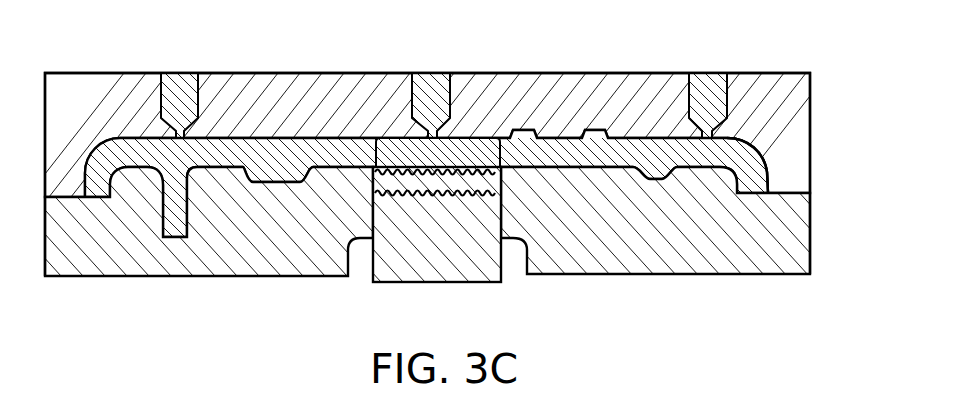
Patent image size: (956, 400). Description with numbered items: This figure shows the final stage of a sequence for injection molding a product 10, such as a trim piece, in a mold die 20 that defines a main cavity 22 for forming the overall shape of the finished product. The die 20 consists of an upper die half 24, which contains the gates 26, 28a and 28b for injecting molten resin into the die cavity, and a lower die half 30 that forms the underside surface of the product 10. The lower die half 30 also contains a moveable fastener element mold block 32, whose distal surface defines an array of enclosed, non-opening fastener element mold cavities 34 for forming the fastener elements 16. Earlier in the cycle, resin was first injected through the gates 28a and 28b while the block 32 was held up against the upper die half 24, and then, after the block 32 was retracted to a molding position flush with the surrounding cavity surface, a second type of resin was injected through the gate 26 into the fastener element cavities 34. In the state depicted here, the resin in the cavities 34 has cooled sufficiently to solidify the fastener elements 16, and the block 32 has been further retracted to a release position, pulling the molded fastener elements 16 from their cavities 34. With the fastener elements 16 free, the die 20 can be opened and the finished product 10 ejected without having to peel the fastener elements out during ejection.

The mold die 20 is at (779, 51).
The upper die half 24 is at (45, 88).
The lower die half 30 is at (45, 215).
The product 10 is at (270, 138).
The main cavity 22 is at (763, 163).
The gate 28a is at (182, 73).
The gate 26 is at (433, 73).
The gate 28b is at (700, 73).
The fastener element 16 is at (377, 168).
The fastener element mold block 32 is at (458, 283).
The fastener element mold cavities 34 is at (385, 196).